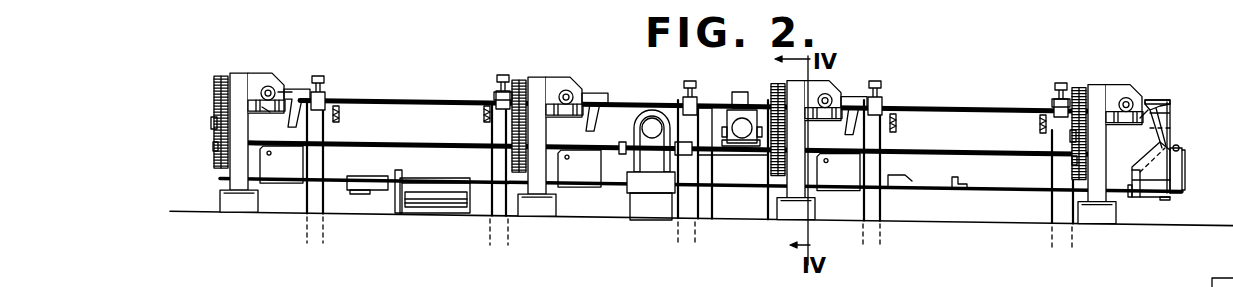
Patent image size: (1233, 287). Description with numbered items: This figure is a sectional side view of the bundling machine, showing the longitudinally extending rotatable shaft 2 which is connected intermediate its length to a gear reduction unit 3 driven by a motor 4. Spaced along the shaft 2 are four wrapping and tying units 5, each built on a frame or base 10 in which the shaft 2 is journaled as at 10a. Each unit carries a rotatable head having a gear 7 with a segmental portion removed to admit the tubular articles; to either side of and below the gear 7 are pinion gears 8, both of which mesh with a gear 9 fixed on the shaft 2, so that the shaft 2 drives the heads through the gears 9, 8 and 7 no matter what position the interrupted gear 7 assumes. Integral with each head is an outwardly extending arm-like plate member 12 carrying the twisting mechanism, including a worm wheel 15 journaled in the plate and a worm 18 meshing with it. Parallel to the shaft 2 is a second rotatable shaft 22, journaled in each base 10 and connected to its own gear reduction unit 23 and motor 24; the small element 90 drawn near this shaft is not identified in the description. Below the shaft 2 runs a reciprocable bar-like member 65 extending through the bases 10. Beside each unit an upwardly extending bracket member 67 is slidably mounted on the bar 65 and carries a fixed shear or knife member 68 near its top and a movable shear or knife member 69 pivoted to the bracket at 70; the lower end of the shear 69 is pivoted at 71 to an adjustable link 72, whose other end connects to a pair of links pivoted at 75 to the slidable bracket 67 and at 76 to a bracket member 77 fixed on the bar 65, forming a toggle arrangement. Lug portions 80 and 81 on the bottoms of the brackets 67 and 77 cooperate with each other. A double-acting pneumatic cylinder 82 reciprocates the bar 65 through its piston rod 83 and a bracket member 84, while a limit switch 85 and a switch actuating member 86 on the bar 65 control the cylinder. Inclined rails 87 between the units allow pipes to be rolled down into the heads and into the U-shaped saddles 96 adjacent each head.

The rotatable shaft 2 is at (390, 143).
The gear reduction unit 3 is at (650, 136).
The motor 4 is at (643, 112).
The wrapping and tying unit 5 is at (253, 66).
The gear 7 is at (222, 80).
The pinion gear 8 is at (219, 108).
The gear 9 is at (218, 163).
The frame or base 10 is at (238, 74).
The journal 10a is at (245, 190).
The arm-like plate member 12 is at (268, 78).
The worm wheel 15 is at (281, 92).
The worm 18 is at (264, 123).
The rotatable shaft 22 is at (385, 100).
The gear reduction unit 23 is at (743, 92).
The motor 24 is at (727, 126).
The reciprocable bar-like member 65 is at (353, 195).
The bracket member 67 is at (289, 172).
The shear or knife member 68 is at (300, 92).
The movable shear or knife member 69 is at (1172, 115).
The pivot 70 is at (1171, 102).
The pivot 71 is at (1142, 119).
The adjustable link 72 is at (1170, 133).
The pivot 75 is at (1141, 198).
The pivot 76 is at (1181, 151).
The bracket member 77 is at (1183, 186).
The lug portion 80 is at (1140, 197).
The lug portion 81 is at (1166, 198).
The double-acting pneumatic cylinder 82 is at (419, 200).
The piston rod 83 is at (383, 196).
The bracket member 84 is at (367, 175).
The limit switch 85 is at (897, 195).
The switch actuating member 86 is at (951, 190).
The inclined rail 87 is at (326, 80).
The pin 90 is at (340, 120).
The U-shaped supporting member or saddle 96 is at (496, 98).